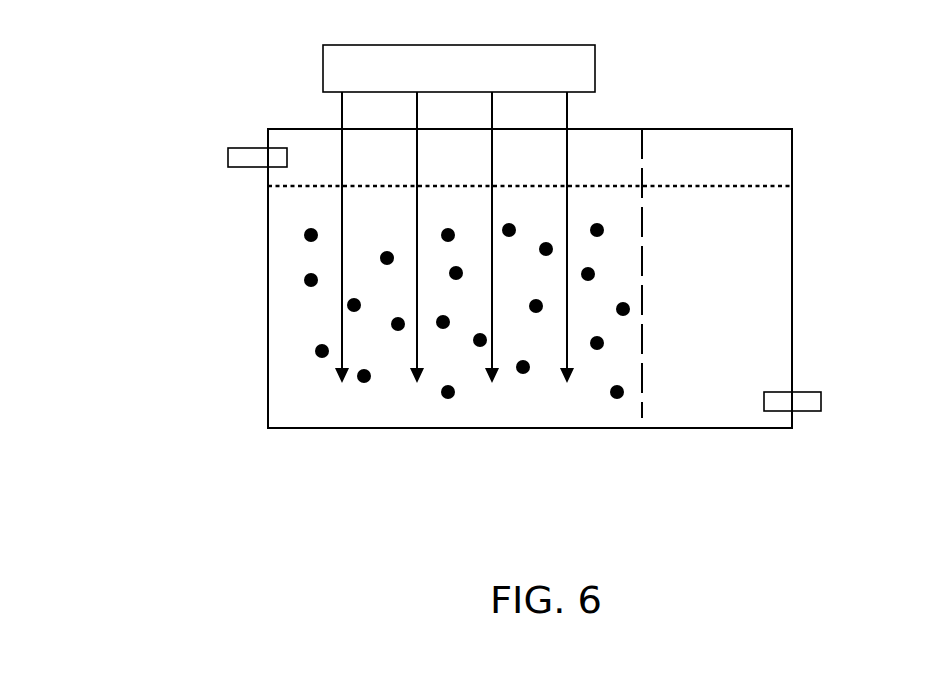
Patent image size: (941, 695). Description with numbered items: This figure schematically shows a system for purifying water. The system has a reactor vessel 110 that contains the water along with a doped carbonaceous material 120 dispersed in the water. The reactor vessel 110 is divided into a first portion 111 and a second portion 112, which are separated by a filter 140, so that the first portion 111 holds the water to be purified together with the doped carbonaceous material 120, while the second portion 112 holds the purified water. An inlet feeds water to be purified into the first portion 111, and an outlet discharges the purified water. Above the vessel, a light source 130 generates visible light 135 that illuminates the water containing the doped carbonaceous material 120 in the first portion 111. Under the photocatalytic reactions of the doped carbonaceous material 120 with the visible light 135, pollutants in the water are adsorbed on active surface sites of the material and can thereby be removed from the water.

The reactor vessel 110 is at (268, 208).
The first portion 111 is at (305, 392).
The second portion 112 is at (736, 317).
The doped carbonaceous material 120 is at (448, 392).
The light source 130 is at (459, 68).
The visible light 135 is at (342, 308).
The filter 140 is at (643, 223).